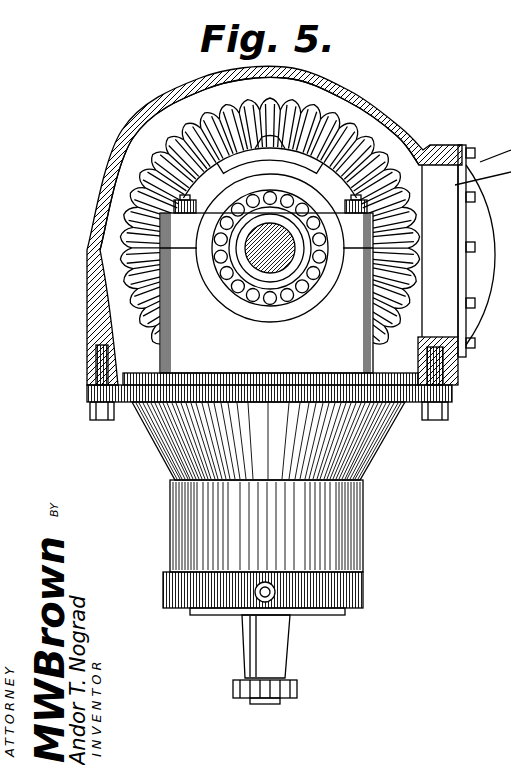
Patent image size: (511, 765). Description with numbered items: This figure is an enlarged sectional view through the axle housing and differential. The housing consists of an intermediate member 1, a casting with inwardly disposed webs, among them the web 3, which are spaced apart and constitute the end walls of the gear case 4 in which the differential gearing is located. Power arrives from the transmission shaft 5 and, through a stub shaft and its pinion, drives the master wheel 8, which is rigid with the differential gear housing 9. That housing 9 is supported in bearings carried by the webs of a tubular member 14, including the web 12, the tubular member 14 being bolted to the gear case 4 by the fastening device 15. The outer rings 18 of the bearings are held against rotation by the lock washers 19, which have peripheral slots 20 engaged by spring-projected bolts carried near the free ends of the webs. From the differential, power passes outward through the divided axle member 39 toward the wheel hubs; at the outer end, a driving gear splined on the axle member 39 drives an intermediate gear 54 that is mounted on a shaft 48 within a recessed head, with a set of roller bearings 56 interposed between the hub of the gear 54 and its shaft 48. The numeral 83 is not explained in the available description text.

The intermediate member 1 is at (143, 115).
The web 3 is at (510, 393).
The gear case 4 is at (140, 148).
The transmission shaft 5 is at (243, 654).
The master wheel 8 is at (142, 183).
The differential gear housing 9 is at (185, 128).
The web 12 is at (183, 328).
The tubular member 14 is at (170, 462).
The fastening device 15 is at (97, 410).
The outer rings 18 is at (208, 270).
The lock washers 19 is at (352, 128).
The peripheral slots 20 is at (300, 165).
The axle member 39 is at (243, 245).
The shaft 48 is at (510, 529).
The gear 54 is at (510, 549).
The roller bearings 56 is at (510, 482).
The element 83 is at (510, 450).